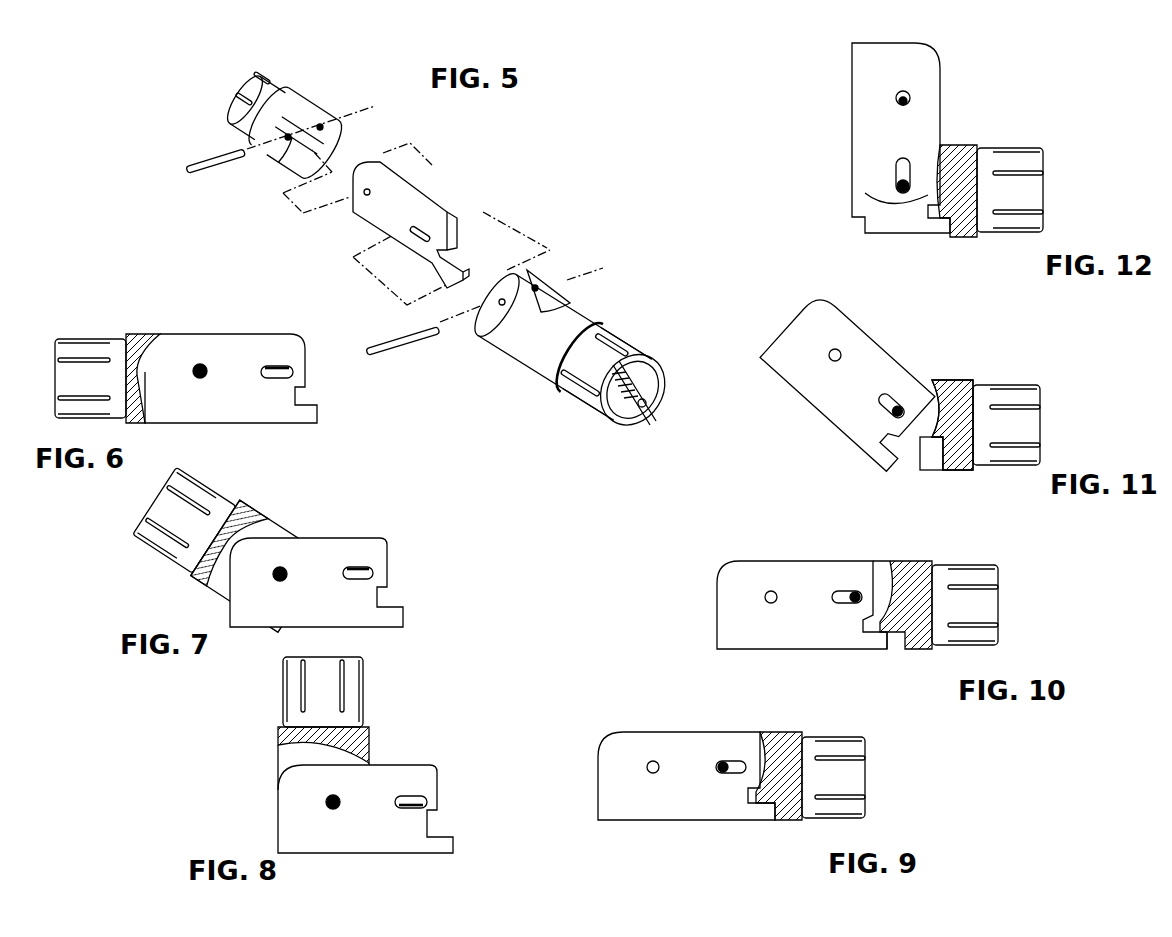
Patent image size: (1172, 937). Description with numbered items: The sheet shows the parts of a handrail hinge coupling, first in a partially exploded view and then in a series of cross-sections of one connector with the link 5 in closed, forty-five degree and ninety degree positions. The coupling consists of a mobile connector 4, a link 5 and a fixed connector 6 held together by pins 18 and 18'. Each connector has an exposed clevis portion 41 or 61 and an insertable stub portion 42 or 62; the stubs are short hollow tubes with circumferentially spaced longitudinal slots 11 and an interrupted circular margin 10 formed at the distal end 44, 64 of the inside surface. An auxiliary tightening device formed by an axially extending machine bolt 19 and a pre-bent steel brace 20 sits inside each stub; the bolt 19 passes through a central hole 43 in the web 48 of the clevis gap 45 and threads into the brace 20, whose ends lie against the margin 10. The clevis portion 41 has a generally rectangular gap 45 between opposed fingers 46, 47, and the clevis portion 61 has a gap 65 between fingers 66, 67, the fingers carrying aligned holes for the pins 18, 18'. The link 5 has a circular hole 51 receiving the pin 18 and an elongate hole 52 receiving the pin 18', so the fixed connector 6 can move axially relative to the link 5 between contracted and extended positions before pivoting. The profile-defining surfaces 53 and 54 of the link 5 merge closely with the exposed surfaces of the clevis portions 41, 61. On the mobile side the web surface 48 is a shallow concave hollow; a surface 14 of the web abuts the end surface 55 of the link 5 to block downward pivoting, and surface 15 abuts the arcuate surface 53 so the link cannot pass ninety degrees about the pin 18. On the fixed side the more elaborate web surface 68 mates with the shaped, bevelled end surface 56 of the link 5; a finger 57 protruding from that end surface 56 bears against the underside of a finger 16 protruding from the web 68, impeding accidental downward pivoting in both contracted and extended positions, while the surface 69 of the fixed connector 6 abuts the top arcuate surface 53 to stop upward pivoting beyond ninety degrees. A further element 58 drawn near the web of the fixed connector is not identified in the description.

In FIG. 5, the mobile connector 4 is at (293, 84).
In FIG. 6, the mobile connector 4 is at (97, 332).
In FIG. 7, the mobile connector 4 is at (260, 510).
In FIG. 8, the mobile connector 4 is at (369, 685).
In FIG. 5, the link 5 is at (418, 180).
In FIG. 6, the link 5 is at (200, 332).
In FIG. 7, the link 5 is at (242, 633).
In FIG. 8, the link 5 is at (275, 812).
In FIG. 9, the link 5 is at (653, 728).
In FIG. 10, the link 5 is at (822, 558).
In FIG. 11, the link 5 is at (833, 432).
In FIG. 12, the link 5 is at (945, 100).
In FIG. 5, the fixed connector 6 is at (616, 322).
In FIG. 9, the fixed connector 6 is at (870, 776).
In FIG. 10, the fixed connector 6 is at (1000, 600).
In FIG. 11, the fixed connector 6 is at (1045, 425).
In FIG. 12, the fixed connector 6 is at (945, 238).
In FIG. 5, the interrupted circular margin 10 is at (664, 383).
In FIG. 6, the interrupted circular margin 10 is at (68, 418).
In FIG. 7, the interrupted circular margin 10 is at (147, 540).
In FIG. 9, the interrupted circular margin 10 is at (862, 816).
In FIG. 5, the slots 11 is at (237, 93).
In FIG. 6, the slots 11 is at (58, 361).
In FIG. 10, the slots 11 is at (998, 624).
In FIG. 11, the slots 11 is at (1028, 446).
In FIG. 6, the surface 14 is at (146, 421).
In FIG. 8, the surface 15 is at (373, 762).
In FIG. 9, the finger 16 is at (763, 800).
In FIG. 10, the finger 16 is at (901, 640).
In FIG. 11, the finger 16 is at (931, 456).
In FIG. 12, the finger 16 is at (932, 212).
In FIG. 5, the pin 18 is at (274, 139).
In FIG. 6, the pin 18 is at (225, 342).
In FIG. 7, the pin 18 is at (311, 546).
In FIG. 8, the pin 18 is at (332, 841).
In FIG. 5, the pin 18' is at (399, 332).
In FIG. 9, the pin 18' is at (741, 737).
In FIG. 10, the pin 18' is at (867, 566).
In FIG. 11, the pin 18' is at (903, 376).
In FIG. 12, the pin 18' is at (903, 211).
In FIG. 5, the machine bolt 19 is at (668, 401).
In FIG. 5, the brace 20 is at (652, 367).
In FIG. 5, the exposed clevis portion 41 is at (308, 99).
In FIG. 6, the exposed clevis portion 41 is at (148, 334).
In FIG. 7, the exposed clevis portion 41 is at (245, 503).
In FIG. 8, the exposed clevis portion 41 is at (371, 737).
In FIG. 5, the insertable stub portion 42 is at (277, 77).
In FIG. 5, the central hole 43 is at (300, 120).
In FIG. 7, the distal end 44 is at (174, 492).
In FIG. 5, the clevis recess or gap 45 is at (317, 178).
In FIG. 5, the finger 46 is at (344, 140).
In FIG. 5, the finger 47 is at (300, 152).
In FIG. 7, the clevis web surface 48 is at (266, 530).
In FIG. 5, the circular hole 51 is at (364, 196).
In FIG. 9, the circular hole 51 is at (646, 767).
In FIG. 10, the circular hole 51 is at (766, 600).
In FIG. 11, the circular hole 51 is at (835, 355).
In FIG. 12, the circular hole 51 is at (903, 91).
In FIG. 6, the elongate hole 52 is at (294, 376).
In FIG. 7, the elongate hole 52 is at (375, 576).
In FIG. 8, the elongate hole 52 is at (430, 795).
In FIG. 5, the profile-defining surface 53 is at (421, 191).
In FIG. 6, the profile-defining surface 53 is at (262, 334).
In FIG. 7, the profile-defining surface 53 is at (343, 538).
In FIG. 8, the profile-defining surface 53 is at (405, 765).
In FIG. 9, the profile-defining surface 53 is at (681, 732).
In FIG. 10, the profile-defining surface 53 is at (802, 605).
In FIG. 11, the profile-defining surface 53 is at (868, 338).
In FIG. 12, the profile-defining surface 53 is at (943, 92).
In FIG. 5, the profile-defining surface 54 is at (422, 262).
In FIG. 8, the profile-defining surface 54 is at (394, 855).
In FIG. 9, the profile-defining surface 54 is at (680, 822).
In FIG. 10, the profile-defining surface 54 is at (807, 650).
In FIG. 6, the end surface 55 is at (148, 374).
In FIG. 7, the end surface 55 is at (232, 600).
In FIG. 12, the end surface 55 is at (876, 43).
In FIG. 6, the end surface 56 is at (307, 352).
In FIG. 7, the end surface 56 is at (388, 560).
In FIG. 12, the end surface 56 is at (882, 207).
In FIG. 6, the finger 57 is at (316, 418).
In FIG. 7, the finger 57 is at (394, 620).
In FIG. 8, the finger 57 is at (446, 852).
In FIG. 9, the finger 57 is at (756, 815).
In FIG. 10, the finger 57 is at (884, 642).
In FIG. 11, the finger 57 is at (883, 470).
In FIG. 12, the finger 57 is at (860, 218).
In FIG. 10, the edge 58 is at (893, 580).
In FIG. 5, the exposed clevis portion 61 is at (604, 306).
In FIG. 9, the exposed clevis portion 61 is at (790, 732).
In FIG. 10, the exposed clevis portion 61 is at (915, 561).
In FIG. 11, the exposed clevis portion 61 is at (966, 380).
In FIG. 12, the exposed clevis portion 61 is at (962, 238).
In FIG. 5, the insertable stub portion 62 is at (646, 357).
In FIG. 10, the insertable stub portion 62 is at (970, 565).
In FIG. 9, the distal end 64 is at (870, 749).
In FIG. 5, the clevis gap 65 is at (551, 290).
In FIG. 5, the finger 66 is at (504, 298).
In FIG. 5, the finger 67 is at (540, 270).
In FIG. 9, the clevis web surface 68 is at (768, 742).
In FIG. 10, the clevis web surface 68 is at (899, 586).
In FIG. 11, the clevis web surface 68 is at (940, 395).
In FIG. 12, the clevis web surface 68 is at (917, 188).
In FIG. 12, the surface 69 is at (938, 148).